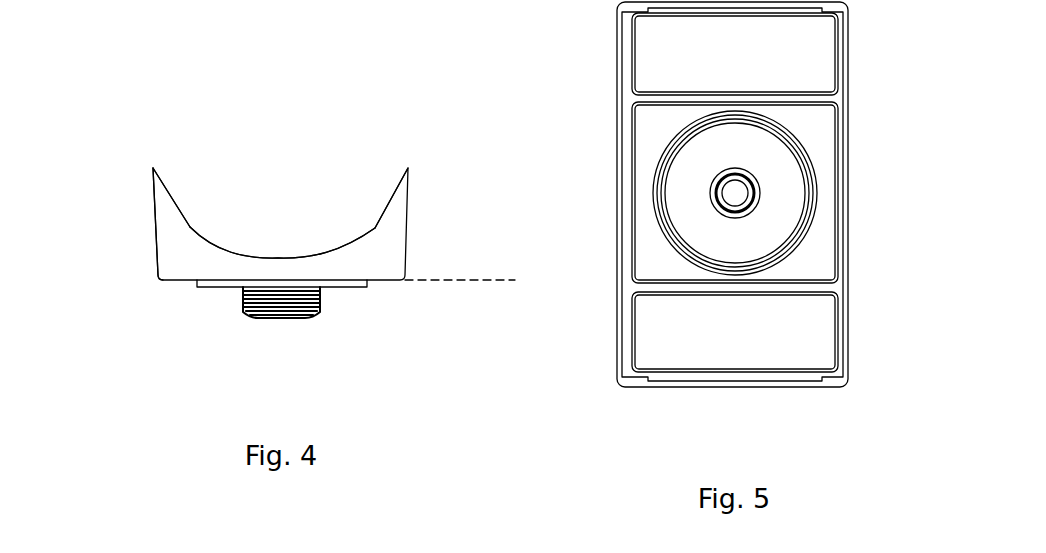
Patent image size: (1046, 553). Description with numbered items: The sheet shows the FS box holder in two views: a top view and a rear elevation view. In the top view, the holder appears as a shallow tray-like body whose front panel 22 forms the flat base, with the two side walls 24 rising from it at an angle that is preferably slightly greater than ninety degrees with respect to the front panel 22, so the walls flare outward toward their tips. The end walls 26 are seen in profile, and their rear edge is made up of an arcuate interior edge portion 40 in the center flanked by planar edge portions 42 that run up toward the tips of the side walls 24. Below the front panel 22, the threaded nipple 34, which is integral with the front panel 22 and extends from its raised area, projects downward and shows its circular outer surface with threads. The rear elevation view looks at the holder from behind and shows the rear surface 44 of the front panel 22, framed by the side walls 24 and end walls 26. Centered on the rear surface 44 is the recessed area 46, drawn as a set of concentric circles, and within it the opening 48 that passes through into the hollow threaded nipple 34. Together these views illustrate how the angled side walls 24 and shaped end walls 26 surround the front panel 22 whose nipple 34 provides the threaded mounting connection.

In FIG. 4, the front panel 22 is at (180, 283).
In FIG. 4, the side walls 24 is at (155, 223).
In FIG. 5, the side walls 24 is at (617, 50).
In FIG. 4, the end walls 26 is at (280, 224).
In FIG. 5, the end walls 26 is at (670, 388).
In FIG. 4, the threaded nipple 34 is at (280, 318).
In FIG. 4, the arcuate interior edge portion 40 is at (280, 258).
In FIG. 4, the planar edge portions 42 is at (173, 197).
In FIG. 5, the rear surface 44 is at (735, 54).
In FIG. 5, the recessed area 46 is at (735, 192).
In FIG. 5, the opening 48 is at (716, 180).